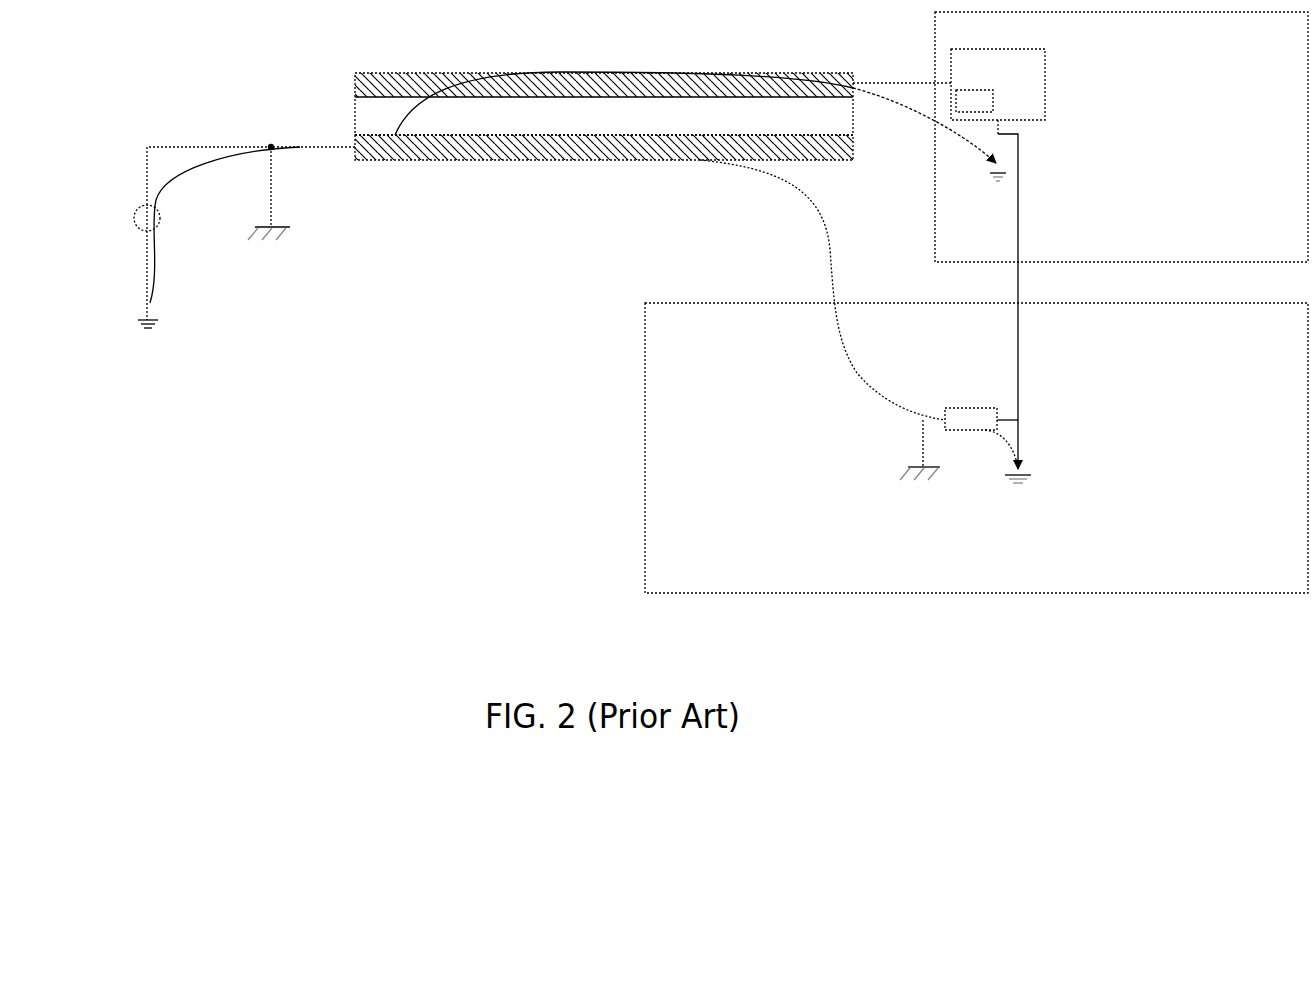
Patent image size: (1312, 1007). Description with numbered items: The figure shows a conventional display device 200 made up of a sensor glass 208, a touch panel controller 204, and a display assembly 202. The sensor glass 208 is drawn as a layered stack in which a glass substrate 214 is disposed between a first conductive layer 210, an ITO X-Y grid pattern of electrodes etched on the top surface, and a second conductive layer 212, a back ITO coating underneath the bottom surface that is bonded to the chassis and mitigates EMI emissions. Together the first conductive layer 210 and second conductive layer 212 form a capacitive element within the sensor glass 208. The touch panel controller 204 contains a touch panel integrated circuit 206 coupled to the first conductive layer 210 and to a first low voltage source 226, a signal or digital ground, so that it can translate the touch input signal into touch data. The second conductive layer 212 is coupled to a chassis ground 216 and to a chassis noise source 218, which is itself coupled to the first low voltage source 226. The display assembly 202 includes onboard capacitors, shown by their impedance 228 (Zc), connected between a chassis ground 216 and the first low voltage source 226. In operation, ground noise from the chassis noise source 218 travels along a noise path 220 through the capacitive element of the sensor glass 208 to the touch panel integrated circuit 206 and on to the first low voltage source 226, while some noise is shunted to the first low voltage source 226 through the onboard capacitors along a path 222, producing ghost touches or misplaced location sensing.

The display device 200 is at (276, 665).
The display assembly 202 is at (976, 448).
The touch panel controller 204 is at (1121, 137).
The touch panel integrated circuit 206 is at (1047, 65).
The sensor glass 208 is at (692, 58).
The first conductive layer 210 is at (350, 77).
The second conductive layer 212 is at (820, 162).
The glass substrate 214 is at (858, 120).
The chassis ground 216 is at (288, 236).
The chassis noise source 218 is at (160, 218).
The noise path 220 is at (890, 100).
The path 222 is at (826, 242).
The first low voltage source 226 is at (993, 176).
The impedance 228 is at (965, 435).